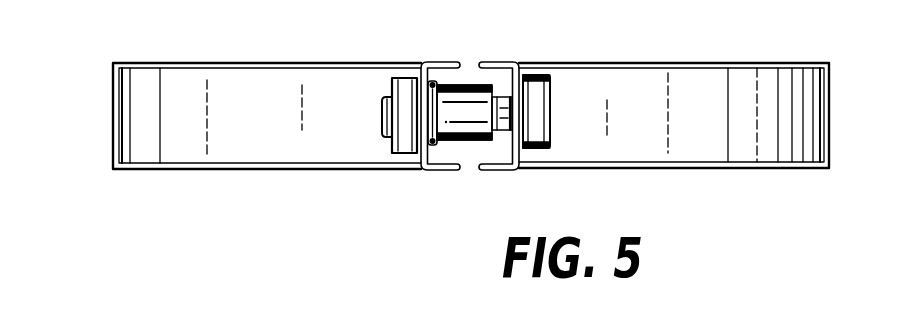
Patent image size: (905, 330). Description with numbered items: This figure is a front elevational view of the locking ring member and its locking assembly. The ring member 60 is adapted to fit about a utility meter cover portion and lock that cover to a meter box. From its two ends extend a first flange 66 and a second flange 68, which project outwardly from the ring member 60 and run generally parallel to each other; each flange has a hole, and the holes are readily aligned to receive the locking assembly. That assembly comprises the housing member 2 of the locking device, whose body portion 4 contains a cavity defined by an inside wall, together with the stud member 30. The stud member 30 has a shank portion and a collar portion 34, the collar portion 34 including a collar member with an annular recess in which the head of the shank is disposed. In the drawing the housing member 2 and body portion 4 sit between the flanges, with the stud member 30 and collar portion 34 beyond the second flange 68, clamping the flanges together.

The ring member 60 is at (118, 99).
The first flange 66 is at (430, 62).
The second flange 68 is at (503, 62).
The housing member 2 is at (389, 132).
The body portion 4 is at (466, 141).
The stud member 30 is at (548, 74).
The collar portion 34 is at (552, 106).